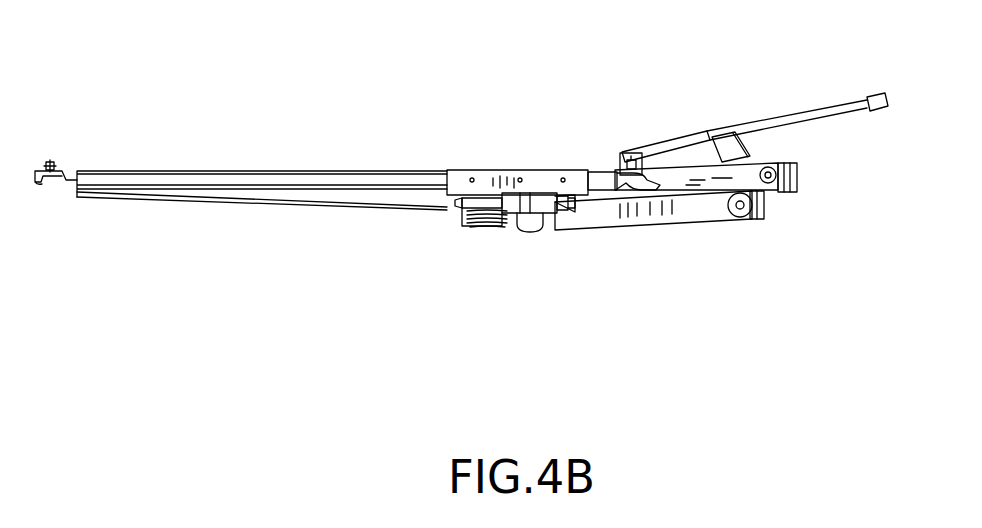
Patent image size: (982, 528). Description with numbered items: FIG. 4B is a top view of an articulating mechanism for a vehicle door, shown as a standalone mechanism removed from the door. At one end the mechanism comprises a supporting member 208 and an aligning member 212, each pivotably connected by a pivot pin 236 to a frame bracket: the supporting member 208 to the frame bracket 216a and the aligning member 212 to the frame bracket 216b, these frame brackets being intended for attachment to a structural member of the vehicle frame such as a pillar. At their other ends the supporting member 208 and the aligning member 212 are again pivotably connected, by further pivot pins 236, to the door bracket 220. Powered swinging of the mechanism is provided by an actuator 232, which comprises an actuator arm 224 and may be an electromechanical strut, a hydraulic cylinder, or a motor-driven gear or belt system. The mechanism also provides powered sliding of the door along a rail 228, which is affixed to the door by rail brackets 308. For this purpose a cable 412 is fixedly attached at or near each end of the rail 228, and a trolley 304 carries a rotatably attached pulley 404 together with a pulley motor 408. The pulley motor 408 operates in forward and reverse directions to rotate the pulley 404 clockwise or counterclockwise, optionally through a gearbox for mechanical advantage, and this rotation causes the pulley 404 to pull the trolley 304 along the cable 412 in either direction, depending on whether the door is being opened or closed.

The supporting member 208 is at (648, 221).
The aligning member 212 is at (746, 176).
The frame bracket 216a is at (768, 213).
The frame bracket 216b is at (796, 190).
The door bracket 220 is at (513, 227).
The actuator arm 224 is at (808, 112).
The rail 228 is at (237, 186).
The actuator 232 is at (677, 160).
The pivot pin 236 is at (530, 222).
The trolley 304 is at (577, 178).
The rail bracket 308 is at (63, 178).
The pulley 404 is at (480, 210).
The pulley motor 408 is at (538, 195).
The cable 412 is at (387, 205).